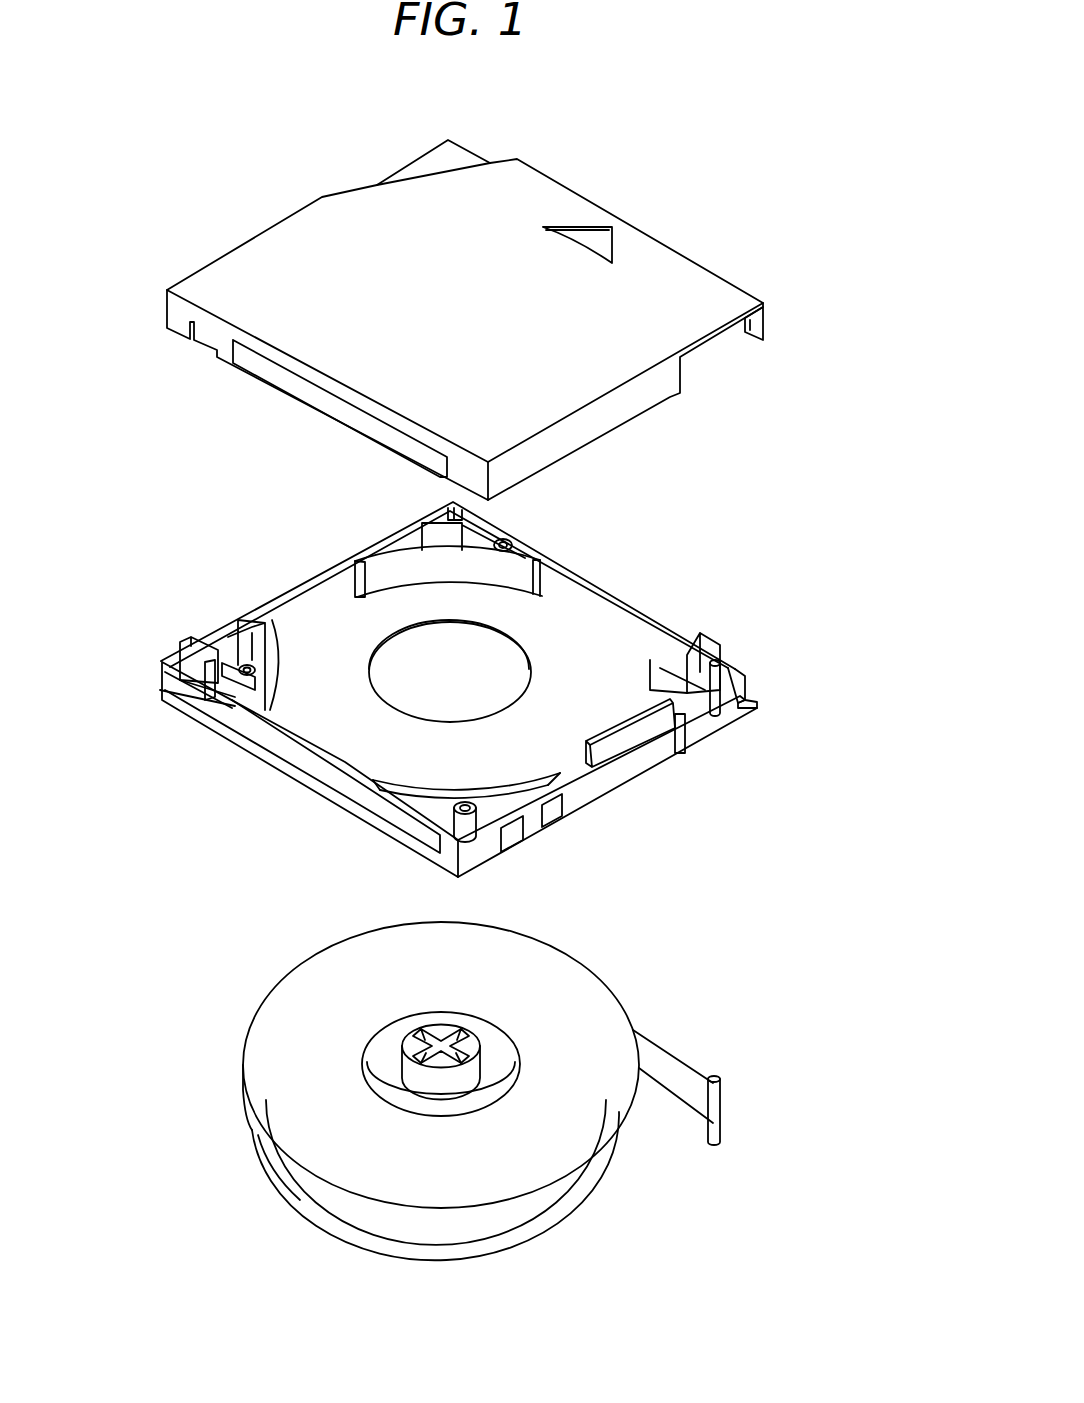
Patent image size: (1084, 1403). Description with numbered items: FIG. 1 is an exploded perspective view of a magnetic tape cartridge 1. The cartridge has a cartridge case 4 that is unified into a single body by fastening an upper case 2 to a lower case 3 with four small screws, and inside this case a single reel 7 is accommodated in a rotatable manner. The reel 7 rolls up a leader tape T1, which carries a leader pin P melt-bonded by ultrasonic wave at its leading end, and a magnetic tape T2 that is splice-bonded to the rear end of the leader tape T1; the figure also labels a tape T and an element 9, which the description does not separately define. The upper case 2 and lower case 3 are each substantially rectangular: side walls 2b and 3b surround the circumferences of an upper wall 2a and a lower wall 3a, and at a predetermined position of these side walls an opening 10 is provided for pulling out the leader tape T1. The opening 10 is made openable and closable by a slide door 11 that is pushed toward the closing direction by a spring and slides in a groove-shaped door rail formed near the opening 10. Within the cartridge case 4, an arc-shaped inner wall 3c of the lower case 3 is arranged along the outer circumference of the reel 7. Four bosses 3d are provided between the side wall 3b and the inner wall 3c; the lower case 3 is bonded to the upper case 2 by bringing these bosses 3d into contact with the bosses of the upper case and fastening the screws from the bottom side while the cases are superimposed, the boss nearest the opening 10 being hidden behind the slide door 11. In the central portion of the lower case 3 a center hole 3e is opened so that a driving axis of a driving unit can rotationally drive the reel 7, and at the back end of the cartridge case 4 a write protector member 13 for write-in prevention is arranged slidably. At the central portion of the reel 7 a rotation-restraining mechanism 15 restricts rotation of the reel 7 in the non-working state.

The magnetic tape cartridge 1 is at (604, 204).
The upper case 2 is at (648, 393).
The upper wall 2a is at (637, 262).
The side wall 2b is at (297, 385).
The lower case 3 is at (546, 546).
The lower wall 3a is at (322, 623).
The side wall 3b is at (320, 753).
The arc-shaped inner wall 3c is at (408, 577).
The bosses 3d is at (240, 663).
The center hole 3e is at (387, 687).
The cartridge case 4 is at (656, 473).
The reel 7 is at (283, 1008).
The tape guide 9 is at (717, 645).
The opening 10 is at (702, 357).
The slide door 11 is at (630, 720).
The write protector member 13 is at (162, 690).
The rotation-restraining mechanism 15 is at (473, 1040).
The tape T is at (697, 683).
The leader tape T1 is at (675, 1072).
The magnetic tape T2 is at (300, 1178).
The leader pin P is at (717, 692).